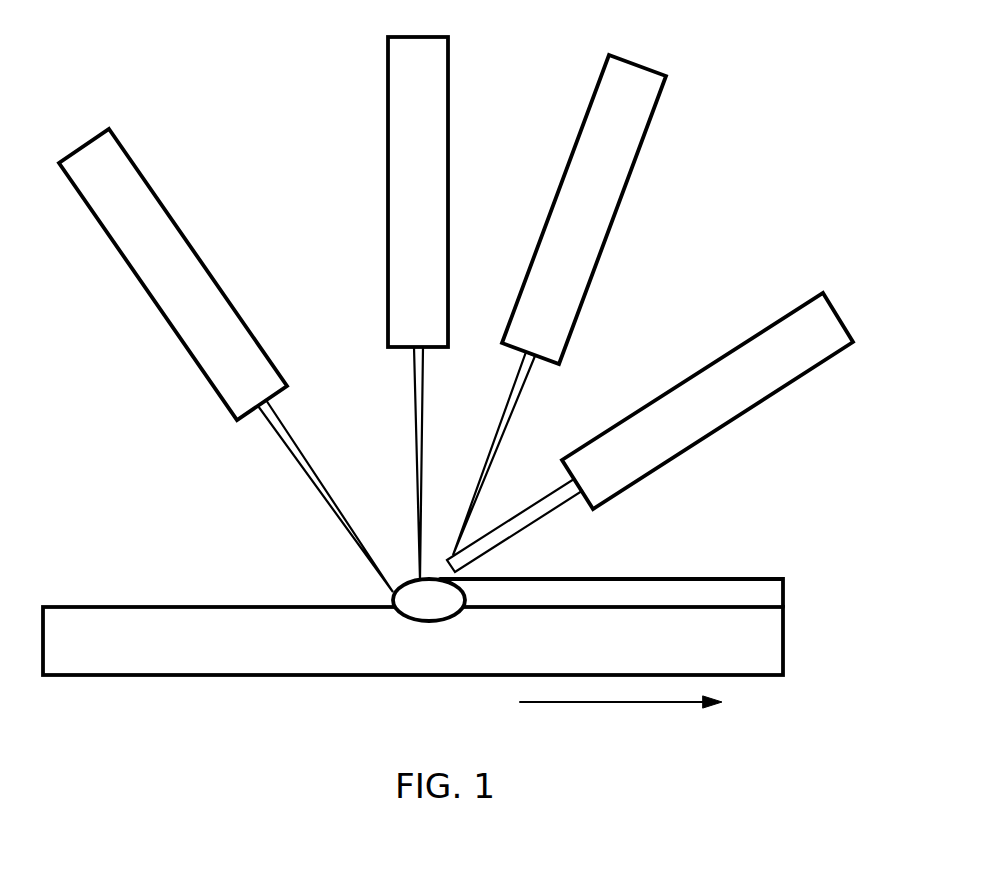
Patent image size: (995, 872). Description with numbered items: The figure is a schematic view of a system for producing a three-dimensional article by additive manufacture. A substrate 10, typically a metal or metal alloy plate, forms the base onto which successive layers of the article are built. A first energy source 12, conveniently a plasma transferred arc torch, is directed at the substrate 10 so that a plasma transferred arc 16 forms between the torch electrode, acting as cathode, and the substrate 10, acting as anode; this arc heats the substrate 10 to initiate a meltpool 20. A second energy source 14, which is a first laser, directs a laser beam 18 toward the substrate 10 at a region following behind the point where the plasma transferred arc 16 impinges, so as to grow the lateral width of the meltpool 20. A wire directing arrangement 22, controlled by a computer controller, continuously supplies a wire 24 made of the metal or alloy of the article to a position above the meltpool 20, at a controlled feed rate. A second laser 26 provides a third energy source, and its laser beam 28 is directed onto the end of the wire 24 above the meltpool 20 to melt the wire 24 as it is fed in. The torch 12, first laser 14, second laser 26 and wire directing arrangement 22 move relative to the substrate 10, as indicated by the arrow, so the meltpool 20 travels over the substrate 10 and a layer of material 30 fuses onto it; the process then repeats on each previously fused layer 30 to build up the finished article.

The substrate 10 is at (262, 677).
The first energy source 12 is at (158, 308).
The second energy source 14 is at (388, 118).
The plasma transferred arc 16 is at (312, 485).
The laser beam 18 is at (413, 406).
The meltpool 20 is at (430, 622).
The wire directing arrangement 22 is at (752, 337).
The wire 24 is at (550, 513).
The second laser 26 is at (592, 102).
The laser beam 28 is at (513, 420).
The layer of material 30 is at (784, 590).